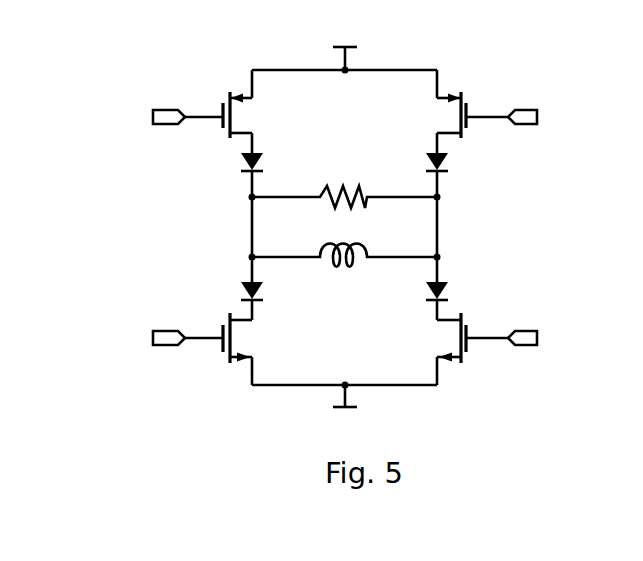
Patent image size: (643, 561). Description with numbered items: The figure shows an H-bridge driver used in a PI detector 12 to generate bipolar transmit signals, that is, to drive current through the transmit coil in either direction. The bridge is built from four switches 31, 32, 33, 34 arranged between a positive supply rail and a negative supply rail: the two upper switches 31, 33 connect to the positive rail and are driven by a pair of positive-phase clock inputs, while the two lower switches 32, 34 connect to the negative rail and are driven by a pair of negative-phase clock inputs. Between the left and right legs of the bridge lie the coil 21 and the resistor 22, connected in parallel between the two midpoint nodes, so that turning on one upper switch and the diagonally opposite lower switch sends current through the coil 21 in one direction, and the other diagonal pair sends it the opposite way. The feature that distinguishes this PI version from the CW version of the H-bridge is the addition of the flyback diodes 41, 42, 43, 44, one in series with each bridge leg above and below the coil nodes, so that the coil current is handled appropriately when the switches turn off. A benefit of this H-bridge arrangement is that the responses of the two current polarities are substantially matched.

The PI detector 12 is at (187, 207).
The coil 21 is at (343, 245).
The resistor 22 is at (343, 185).
The switch 31 is at (252, 117).
The switch 32 is at (252, 338).
The switch 33 is at (437, 117).
The switch 34 is at (437, 338).
The flyback diode 41 is at (240, 162).
The flyback diode 42 is at (240, 292).
The flyback diode 43 is at (449, 163).
The flyback diode 44 is at (449, 293).